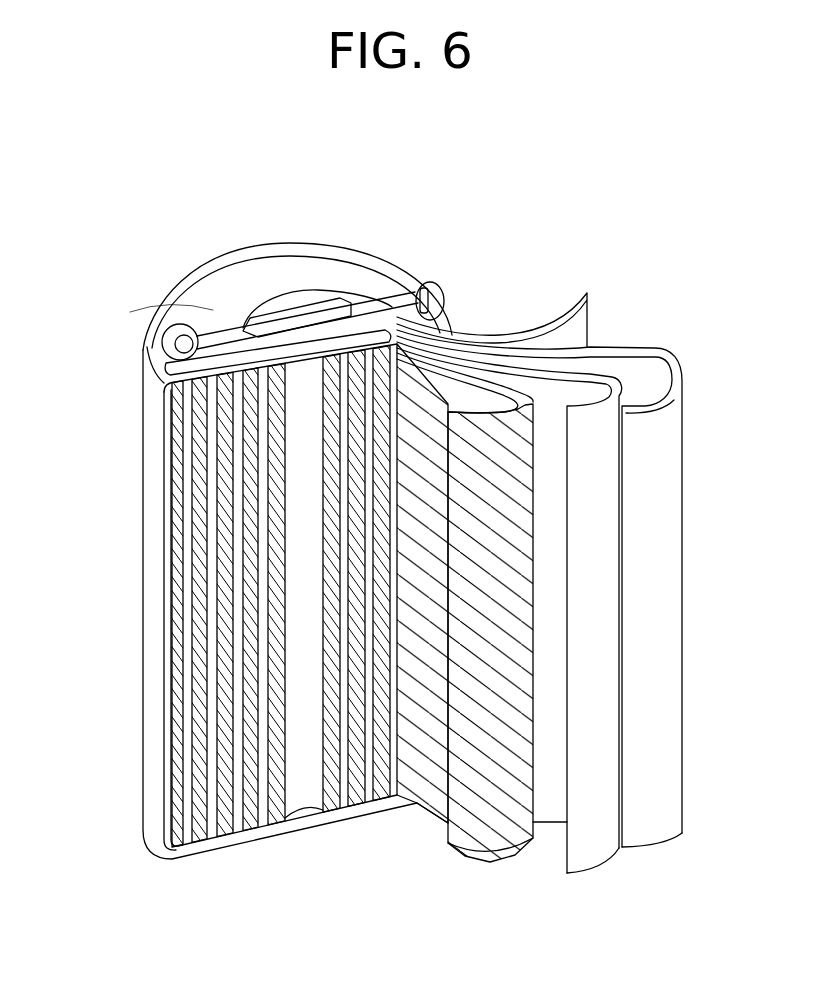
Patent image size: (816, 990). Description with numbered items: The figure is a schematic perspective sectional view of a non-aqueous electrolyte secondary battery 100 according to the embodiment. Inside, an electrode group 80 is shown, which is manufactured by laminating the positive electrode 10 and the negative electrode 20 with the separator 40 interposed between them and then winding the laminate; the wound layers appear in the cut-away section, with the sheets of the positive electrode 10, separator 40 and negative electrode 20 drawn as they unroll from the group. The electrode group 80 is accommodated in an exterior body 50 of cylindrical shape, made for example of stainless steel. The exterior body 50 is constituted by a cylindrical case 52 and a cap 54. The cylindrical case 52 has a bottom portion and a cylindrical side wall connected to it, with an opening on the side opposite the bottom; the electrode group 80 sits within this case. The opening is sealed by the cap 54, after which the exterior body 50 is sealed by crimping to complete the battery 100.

The non-aqueous electrolyte secondary battery 100 is at (667, 221).
The exterior body 50 is at (92, 295).
The cylindrical case 52 is at (153, 452).
The cap 54 is at (215, 316).
The electrode group 80 is at (688, 921).
The positive electrode 10 is at (490, 824).
The separator 40 is at (580, 840).
The negative electrode 20 is at (662, 817).